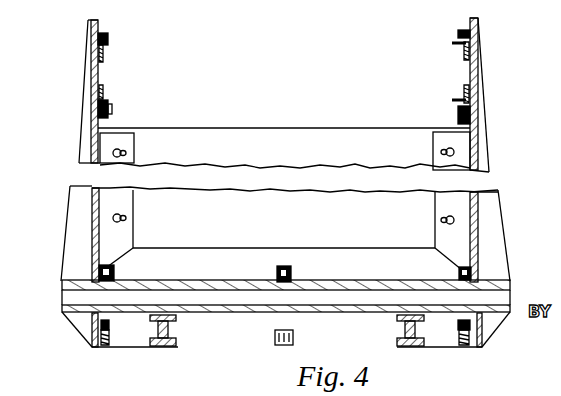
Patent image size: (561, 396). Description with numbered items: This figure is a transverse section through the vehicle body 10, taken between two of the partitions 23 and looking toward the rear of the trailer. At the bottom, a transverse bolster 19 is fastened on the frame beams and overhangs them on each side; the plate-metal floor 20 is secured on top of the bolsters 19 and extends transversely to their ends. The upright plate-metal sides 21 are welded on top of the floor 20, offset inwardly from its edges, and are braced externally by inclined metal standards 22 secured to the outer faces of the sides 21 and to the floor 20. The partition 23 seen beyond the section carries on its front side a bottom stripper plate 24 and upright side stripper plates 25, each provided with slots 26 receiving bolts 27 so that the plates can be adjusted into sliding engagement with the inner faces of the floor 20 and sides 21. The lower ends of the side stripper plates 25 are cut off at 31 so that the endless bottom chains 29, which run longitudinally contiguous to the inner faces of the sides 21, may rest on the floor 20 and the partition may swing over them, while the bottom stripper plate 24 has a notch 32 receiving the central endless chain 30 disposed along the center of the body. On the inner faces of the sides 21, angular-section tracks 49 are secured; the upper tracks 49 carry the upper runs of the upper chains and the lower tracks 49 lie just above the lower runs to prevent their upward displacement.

The vehicle body 10 is at (478, 148).
The transverse bolsters 19 is at (510, 292).
The plate-metal floor 20 is at (346, 276).
The upright plate-metal sides 21 is at (92, 96).
The inclined metal standards 22 is at (497, 192).
The partitions 23 is at (325, 142).
The bottom stripper plate 24 is at (246, 258).
The upright side stripper plates 25 is at (133, 197).
The slots 26 is at (128, 153).
The bolts 27 is at (127, 218).
The endless bottom chains 29 is at (108, 38).
The central endless chain 30 is at (290, 268).
The cut-off 31 is at (112, 276).
The notch 32 is at (291, 274).
The tracks 49 is at (101, 50).